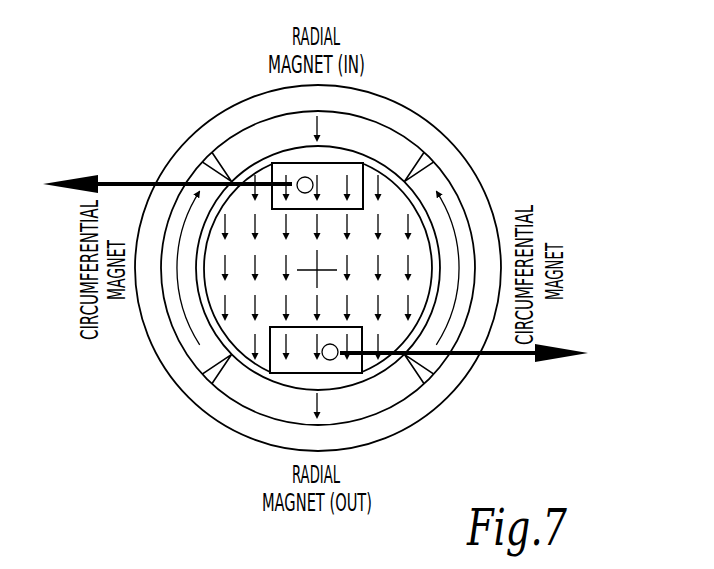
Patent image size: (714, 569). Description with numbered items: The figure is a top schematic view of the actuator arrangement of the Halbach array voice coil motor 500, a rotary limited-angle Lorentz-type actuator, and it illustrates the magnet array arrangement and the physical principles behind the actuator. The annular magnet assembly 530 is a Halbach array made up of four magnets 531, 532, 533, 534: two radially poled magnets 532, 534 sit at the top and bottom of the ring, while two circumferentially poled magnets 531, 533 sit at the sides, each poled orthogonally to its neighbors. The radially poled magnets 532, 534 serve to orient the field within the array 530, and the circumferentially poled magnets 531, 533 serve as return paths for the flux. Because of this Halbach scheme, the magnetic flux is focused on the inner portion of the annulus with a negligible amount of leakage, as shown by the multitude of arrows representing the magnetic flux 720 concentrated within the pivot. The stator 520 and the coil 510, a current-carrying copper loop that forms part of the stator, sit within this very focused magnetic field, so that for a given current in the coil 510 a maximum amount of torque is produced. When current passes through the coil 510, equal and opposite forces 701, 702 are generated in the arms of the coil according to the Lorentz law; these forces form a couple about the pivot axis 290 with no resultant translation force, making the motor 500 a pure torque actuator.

The Halbach array voice coil motor 500 is at (215, 80).
The coil 510 is at (342, 176).
The stator 520 is at (417, 248).
The magnet assembly 530 is at (215, 410).
The circumferentially poled magnet 531 is at (437, 176).
The radially poled magnet 532 is at (287, 417).
The circumferentially poled magnet 533 is at (176, 306).
The radially poled magnet 534 is at (362, 130).
The force 701 is at (116, 182).
The force 702 is at (517, 355).
The magnetic flux 720 is at (248, 250).
The axis 290 is at (318, 270).